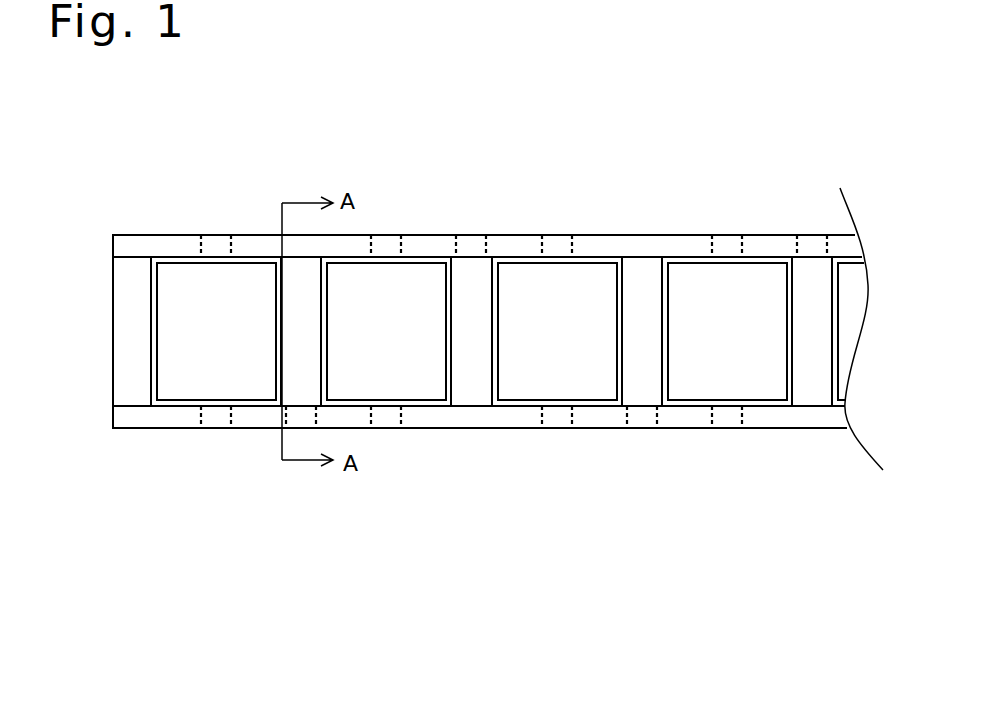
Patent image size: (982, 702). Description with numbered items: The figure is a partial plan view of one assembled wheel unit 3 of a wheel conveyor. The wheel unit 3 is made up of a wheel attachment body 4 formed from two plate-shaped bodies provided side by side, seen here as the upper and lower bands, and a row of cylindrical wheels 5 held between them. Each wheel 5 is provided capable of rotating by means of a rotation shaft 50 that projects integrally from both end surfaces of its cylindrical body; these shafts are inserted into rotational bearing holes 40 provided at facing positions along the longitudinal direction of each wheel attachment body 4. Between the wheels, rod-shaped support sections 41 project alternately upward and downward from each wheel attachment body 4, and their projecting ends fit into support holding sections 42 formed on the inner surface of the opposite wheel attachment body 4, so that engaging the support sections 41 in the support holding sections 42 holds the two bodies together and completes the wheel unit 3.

The wheel unit 3 is at (662, 492).
The wheel attachment body 4 is at (803, 427).
The wheel 5 is at (187, 332).
The rotational bearing hole 40 is at (225, 238).
The support section 41 is at (644, 287).
The support holding section 42 is at (473, 240).
The rotation shaft 50 is at (217, 261).